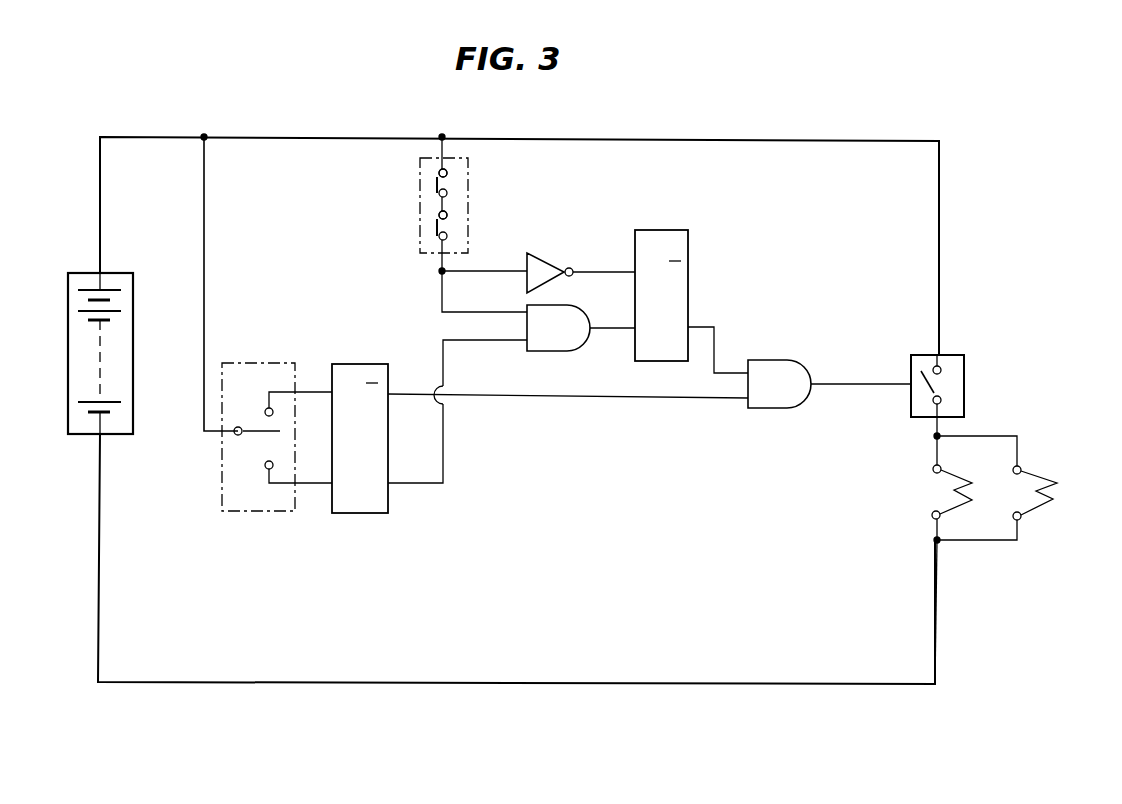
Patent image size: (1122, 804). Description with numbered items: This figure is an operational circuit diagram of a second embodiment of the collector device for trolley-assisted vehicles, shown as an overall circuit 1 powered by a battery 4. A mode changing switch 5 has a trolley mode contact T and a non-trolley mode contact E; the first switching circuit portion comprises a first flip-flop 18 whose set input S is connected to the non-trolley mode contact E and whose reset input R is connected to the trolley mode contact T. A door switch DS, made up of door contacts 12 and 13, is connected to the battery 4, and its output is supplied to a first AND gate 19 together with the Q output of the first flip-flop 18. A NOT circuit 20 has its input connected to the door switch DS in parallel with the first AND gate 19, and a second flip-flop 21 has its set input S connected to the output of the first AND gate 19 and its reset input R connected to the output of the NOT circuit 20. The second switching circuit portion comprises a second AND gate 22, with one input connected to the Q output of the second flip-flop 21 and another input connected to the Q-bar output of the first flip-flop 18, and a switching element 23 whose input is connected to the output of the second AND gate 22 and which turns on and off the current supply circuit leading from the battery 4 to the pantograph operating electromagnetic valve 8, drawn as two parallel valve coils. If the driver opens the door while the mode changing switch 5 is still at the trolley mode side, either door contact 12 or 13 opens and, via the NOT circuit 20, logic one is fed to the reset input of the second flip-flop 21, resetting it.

The control circuit 1 is at (606, 136).
The battery 4 is at (133, 412).
The mode changing switch 5 is at (292, 512).
The pantograph operating electromagnetic valve 8 is at (1005, 430).
The door contact 12 is at (435, 181).
The door contact 13 is at (435, 226).
The first flip-flop 18 is at (358, 515).
The first AND gate 19 is at (560, 340).
The NOT circuit 20 is at (553, 264).
The second flip-flop 21 is at (663, 230).
The second AND gate 22 is at (767, 360).
The switching element 23 is at (963, 358).